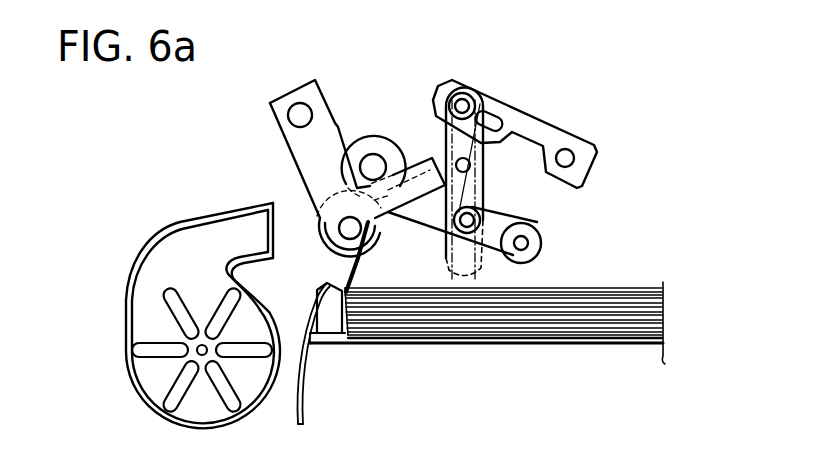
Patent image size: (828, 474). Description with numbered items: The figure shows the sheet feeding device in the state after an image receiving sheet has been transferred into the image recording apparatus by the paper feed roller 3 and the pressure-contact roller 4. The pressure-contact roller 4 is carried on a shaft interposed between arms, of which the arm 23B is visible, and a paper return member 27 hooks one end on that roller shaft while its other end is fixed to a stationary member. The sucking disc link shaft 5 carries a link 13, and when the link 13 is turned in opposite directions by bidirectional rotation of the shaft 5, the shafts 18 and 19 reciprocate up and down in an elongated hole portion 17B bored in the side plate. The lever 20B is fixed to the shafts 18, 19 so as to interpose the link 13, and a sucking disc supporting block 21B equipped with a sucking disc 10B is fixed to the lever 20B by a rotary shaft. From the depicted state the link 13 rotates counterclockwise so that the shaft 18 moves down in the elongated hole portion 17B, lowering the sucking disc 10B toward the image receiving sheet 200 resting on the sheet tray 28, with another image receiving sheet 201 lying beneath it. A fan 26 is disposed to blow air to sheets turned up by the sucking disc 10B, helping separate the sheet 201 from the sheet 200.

The paper feed roller 3 is at (382, 132).
The pressure-contact roller 4 is at (333, 202).
The sucking disc link shaft 5 is at (578, 142).
The link 13 is at (540, 117).
The shaft 18 is at (475, 95).
The shaft 19 is at (473, 167).
The lever 20B is at (487, 202).
The sucking disc supporting block 21B is at (497, 254).
The arm 23B is at (295, 93).
The sucking disc 10B is at (420, 220).
The elongated hole portion 17B is at (470, 277).
The fan 26 is at (150, 268).
The paper return member 27 is at (293, 397).
The sheet tray 28 is at (335, 335).
The image receiving sheet 200 is at (613, 288).
The image receiving sheet 201 is at (665, 285).